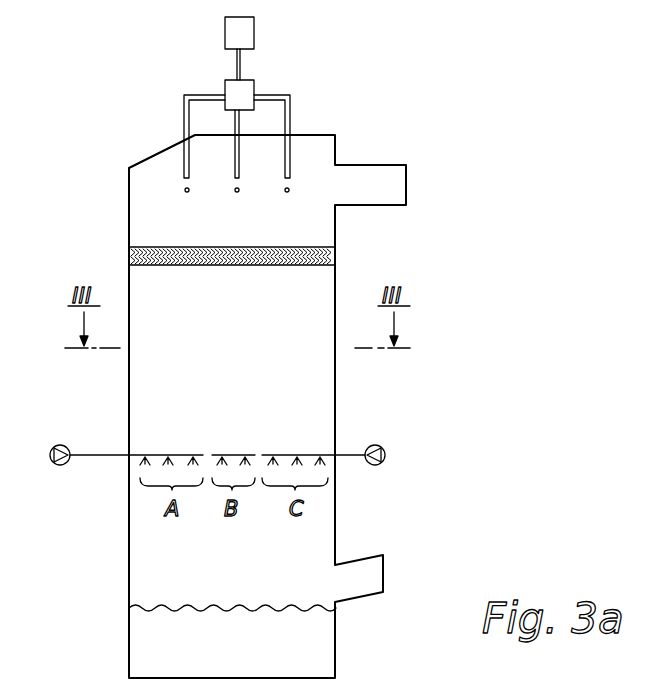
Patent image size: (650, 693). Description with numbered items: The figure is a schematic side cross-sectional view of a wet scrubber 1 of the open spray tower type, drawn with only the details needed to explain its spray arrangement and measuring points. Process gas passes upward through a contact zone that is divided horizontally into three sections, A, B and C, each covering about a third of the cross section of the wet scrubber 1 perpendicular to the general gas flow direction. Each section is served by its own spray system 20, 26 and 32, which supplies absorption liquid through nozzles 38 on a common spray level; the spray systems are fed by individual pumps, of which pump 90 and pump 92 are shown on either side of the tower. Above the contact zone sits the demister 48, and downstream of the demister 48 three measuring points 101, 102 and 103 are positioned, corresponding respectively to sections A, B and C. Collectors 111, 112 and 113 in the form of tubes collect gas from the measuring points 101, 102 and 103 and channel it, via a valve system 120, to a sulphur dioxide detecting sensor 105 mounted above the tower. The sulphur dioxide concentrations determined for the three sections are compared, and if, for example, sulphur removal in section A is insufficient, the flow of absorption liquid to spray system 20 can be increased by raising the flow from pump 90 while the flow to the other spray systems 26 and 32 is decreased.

The wet scrubber 1 is at (120, 78).
The sulphur dioxide detecting sensor 105 is at (254, 34).
The valve system 120 is at (254, 86).
The collector 111 is at (180, 165).
The collector 112 is at (234, 125).
The collector 113 is at (290, 153).
The measuring point 101 is at (185, 190).
The measuring point 102 is at (237, 192).
The measuring point 103 is at (289, 191).
The demister 48 is at (150, 252).
The spray system 20 is at (176, 452).
The spray system 26 is at (230, 452).
The spray system 32 is at (305, 452).
The nozzles 38 is at (327, 457).
The pump 90 is at (60, 466).
The pump 92 is at (385, 449).